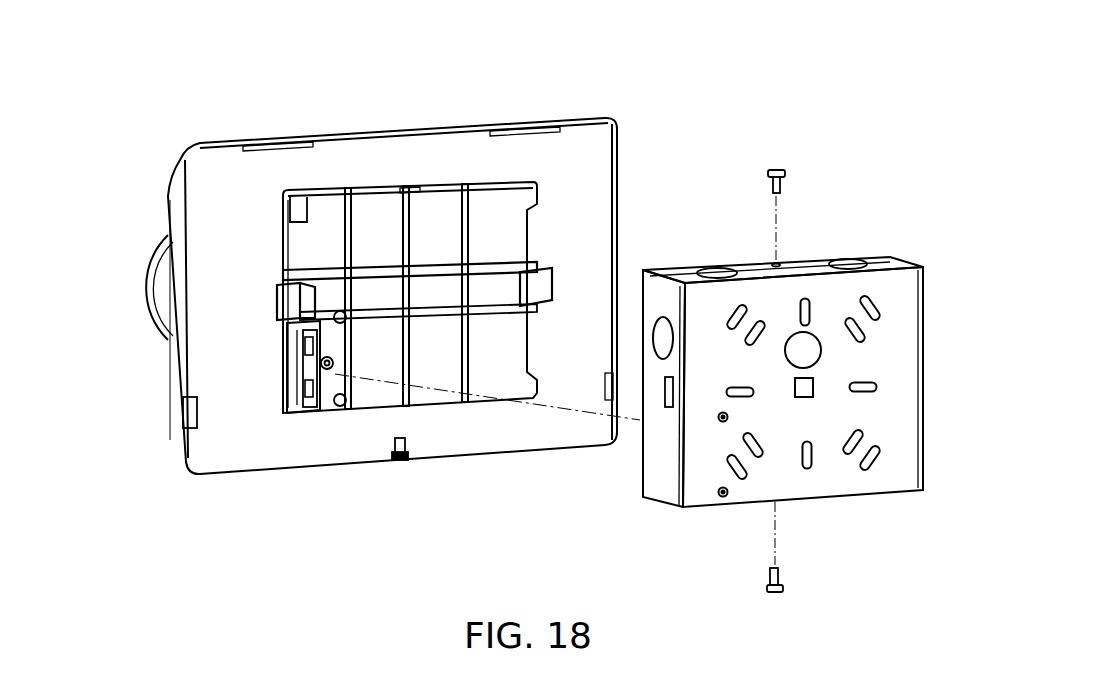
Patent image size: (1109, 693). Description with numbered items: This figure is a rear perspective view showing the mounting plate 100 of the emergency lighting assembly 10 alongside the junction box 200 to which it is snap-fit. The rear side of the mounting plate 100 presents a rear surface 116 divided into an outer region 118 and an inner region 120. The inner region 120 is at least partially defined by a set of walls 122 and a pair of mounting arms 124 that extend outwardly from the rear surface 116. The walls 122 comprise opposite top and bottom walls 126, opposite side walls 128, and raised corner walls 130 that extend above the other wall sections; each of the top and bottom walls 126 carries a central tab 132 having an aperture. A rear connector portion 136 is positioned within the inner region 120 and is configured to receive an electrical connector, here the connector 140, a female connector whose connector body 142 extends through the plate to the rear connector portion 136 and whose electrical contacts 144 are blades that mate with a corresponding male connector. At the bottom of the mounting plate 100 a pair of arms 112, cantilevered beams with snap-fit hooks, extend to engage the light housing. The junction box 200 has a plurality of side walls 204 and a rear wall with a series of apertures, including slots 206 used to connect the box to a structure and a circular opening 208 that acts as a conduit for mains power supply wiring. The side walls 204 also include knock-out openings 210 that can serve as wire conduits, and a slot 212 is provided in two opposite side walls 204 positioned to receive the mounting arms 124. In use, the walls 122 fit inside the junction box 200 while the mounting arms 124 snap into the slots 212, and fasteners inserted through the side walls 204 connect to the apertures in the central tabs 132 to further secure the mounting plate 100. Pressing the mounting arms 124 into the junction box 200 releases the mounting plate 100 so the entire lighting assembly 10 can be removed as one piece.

The emergency lighting assembly 10 is at (130, 157).
The mounting plate 100 is at (202, 157).
The arms 112 is at (190, 412).
The rear surface 116 is at (200, 372).
The outer region 118 is at (595, 134).
The inner region 120 is at (484, 202).
The walls 122 is at (372, 184).
The mounting arms 124 is at (545, 275).
The top and bottom walls 126 is at (333, 181).
The side walls 128 is at (283, 230).
The raised corner walls 130 is at (515, 178).
The central tab 132 is at (418, 410).
The rear connector portion 136 is at (333, 382).
The connector 140 is at (320, 422).
The connector body 142 is at (290, 377).
The electrical contacts 144 is at (297, 408).
The junction box 200 is at (942, 230).
The side walls 204 is at (800, 260).
The slots 206 is at (870, 388).
The circular openings 208 is at (808, 347).
The knock-out openings 210 is at (848, 259).
The slot 212 is at (672, 410).